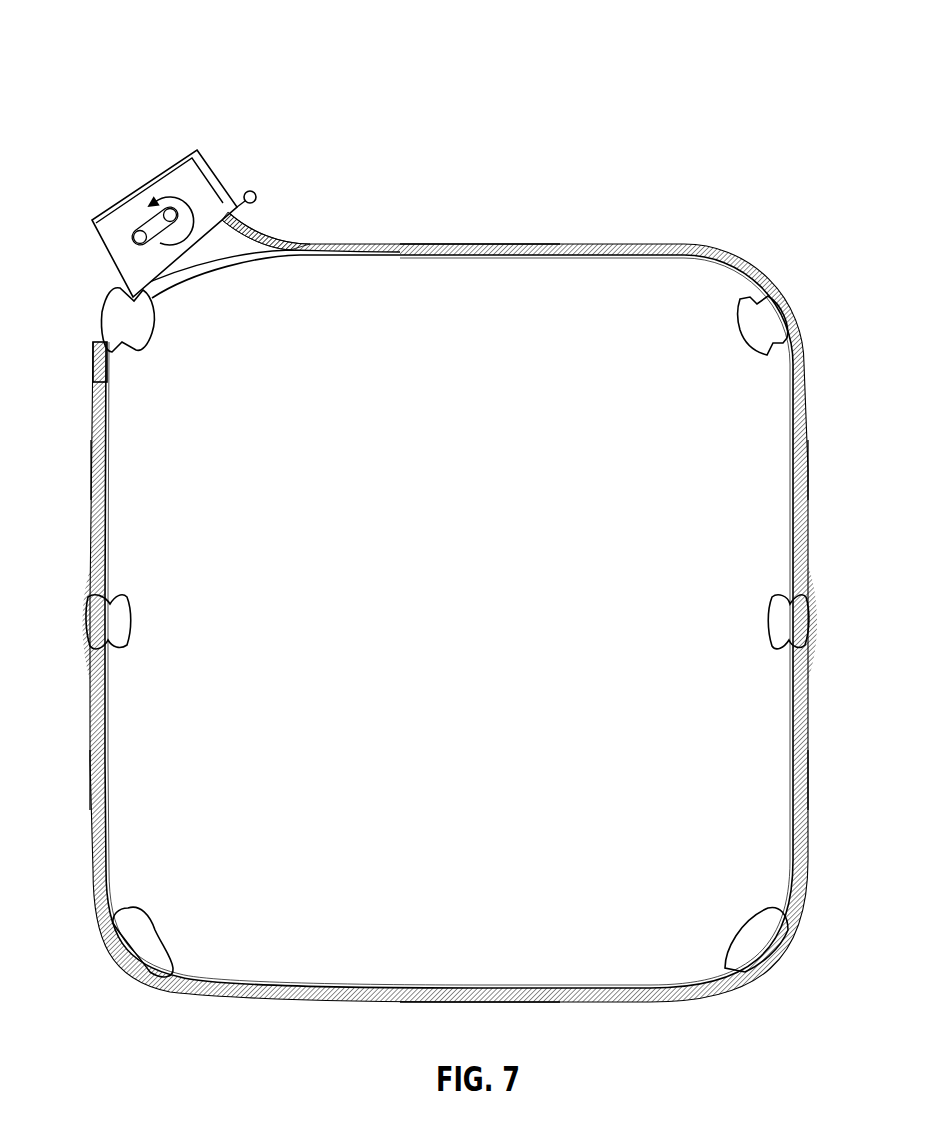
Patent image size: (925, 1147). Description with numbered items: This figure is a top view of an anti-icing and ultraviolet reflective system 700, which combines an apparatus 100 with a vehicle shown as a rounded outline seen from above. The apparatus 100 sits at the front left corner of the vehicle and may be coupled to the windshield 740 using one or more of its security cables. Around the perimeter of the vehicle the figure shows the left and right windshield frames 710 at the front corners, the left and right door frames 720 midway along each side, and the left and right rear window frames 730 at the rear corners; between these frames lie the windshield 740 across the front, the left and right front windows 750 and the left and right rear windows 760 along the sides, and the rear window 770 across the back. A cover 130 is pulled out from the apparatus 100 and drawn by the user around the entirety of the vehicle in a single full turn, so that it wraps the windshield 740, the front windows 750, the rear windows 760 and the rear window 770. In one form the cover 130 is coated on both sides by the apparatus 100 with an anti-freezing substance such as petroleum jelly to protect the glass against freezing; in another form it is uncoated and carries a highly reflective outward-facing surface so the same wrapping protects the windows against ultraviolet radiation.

The anti-icing and ultraviolet reflective system 700 is at (114, 91).
The apparatus 100 is at (113, 210).
The cover 130 is at (262, 237).
The left and right windshield frames 710 is at (115, 318).
The left and right door frames 720 is at (102, 615).
The left and right rear window frames 730 is at (130, 938).
The windshield 740 is at (477, 256).
The left and right front windows 750 is at (105, 473).
The left and right rear windows 760 is at (105, 783).
The rear window 770 is at (483, 988).